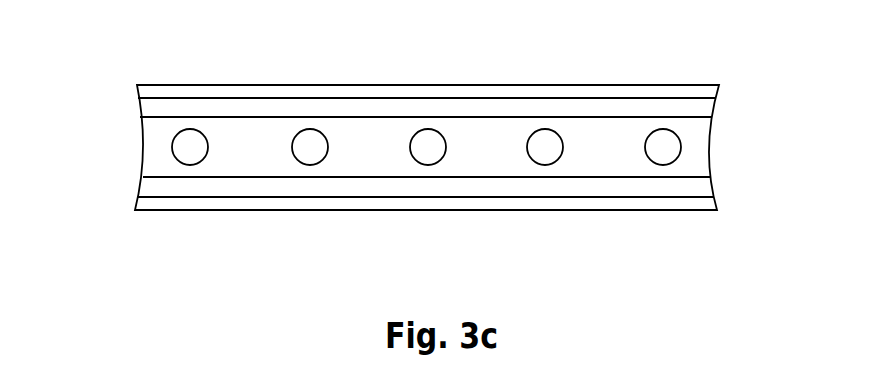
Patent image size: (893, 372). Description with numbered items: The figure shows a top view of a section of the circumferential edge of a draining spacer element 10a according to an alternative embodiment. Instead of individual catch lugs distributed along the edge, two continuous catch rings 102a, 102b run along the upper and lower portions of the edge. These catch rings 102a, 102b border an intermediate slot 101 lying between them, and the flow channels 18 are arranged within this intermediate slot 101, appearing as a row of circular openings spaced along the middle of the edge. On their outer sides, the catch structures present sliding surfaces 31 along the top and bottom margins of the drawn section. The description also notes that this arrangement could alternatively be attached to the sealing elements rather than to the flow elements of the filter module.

The draining spacer element 10a is at (745, 145).
The flow channels 18 is at (193, 144).
The sliding surfaces 31 is at (678, 93).
The intermediate slot 101 is at (693, 157).
The catch ring 102a is at (695, 107).
The catch ring 102b is at (178, 183).